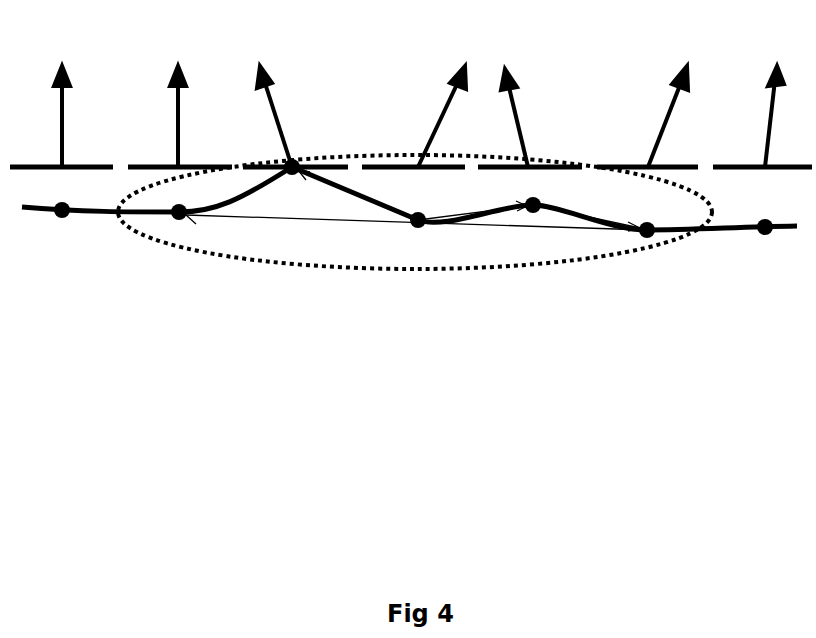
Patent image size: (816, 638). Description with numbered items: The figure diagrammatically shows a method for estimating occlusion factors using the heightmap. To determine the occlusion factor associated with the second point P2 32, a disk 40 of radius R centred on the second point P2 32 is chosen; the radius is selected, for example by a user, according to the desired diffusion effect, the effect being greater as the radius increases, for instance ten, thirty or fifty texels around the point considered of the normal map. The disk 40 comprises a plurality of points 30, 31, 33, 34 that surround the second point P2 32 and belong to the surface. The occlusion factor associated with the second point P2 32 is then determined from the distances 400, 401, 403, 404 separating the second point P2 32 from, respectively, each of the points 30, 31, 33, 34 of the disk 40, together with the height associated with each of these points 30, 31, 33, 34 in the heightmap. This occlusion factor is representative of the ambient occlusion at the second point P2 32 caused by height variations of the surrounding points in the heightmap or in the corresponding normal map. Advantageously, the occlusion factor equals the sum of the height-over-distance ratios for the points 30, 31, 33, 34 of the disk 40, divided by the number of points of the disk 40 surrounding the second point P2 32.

The point of the disk 30 is at (175, 222).
The point of the disk 31 is at (292, 175).
The second point P2 32 is at (422, 229).
The point of the disk 33 is at (535, 212).
The point of the disk 34 is at (650, 238).
The disk 40 is at (223, 255).
The distance 400 is at (345, 222).
The distance 401 is at (325, 152).
The distance 403 is at (475, 213).
The distance 404 is at (600, 230).